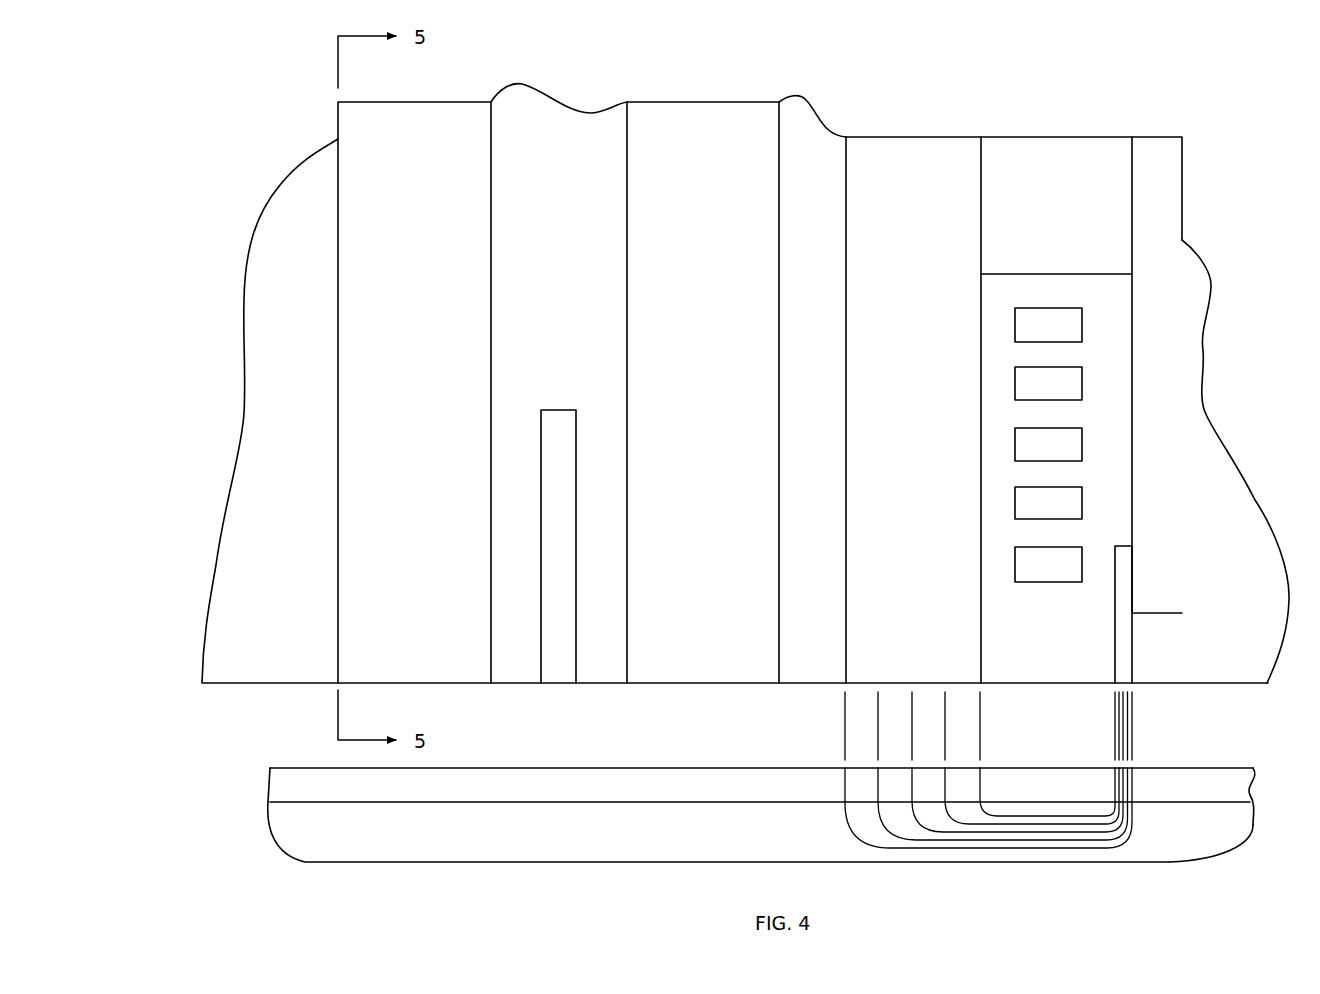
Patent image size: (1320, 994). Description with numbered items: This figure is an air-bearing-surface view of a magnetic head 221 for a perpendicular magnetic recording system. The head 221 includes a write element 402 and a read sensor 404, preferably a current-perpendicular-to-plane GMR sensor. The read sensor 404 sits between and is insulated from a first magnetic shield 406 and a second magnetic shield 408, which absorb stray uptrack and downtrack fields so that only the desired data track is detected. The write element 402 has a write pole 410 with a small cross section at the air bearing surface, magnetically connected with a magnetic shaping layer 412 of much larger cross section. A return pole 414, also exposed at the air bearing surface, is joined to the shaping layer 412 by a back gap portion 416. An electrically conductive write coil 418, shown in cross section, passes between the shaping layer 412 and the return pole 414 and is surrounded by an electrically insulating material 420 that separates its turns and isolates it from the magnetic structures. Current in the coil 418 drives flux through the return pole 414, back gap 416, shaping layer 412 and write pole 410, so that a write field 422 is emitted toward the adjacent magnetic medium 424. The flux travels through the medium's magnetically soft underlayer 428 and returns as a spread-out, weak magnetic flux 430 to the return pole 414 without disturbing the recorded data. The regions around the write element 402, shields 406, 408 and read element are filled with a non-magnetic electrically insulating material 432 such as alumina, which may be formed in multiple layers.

The magnetic head 221 is at (980, 88).
The write element 402 is at (864, 132).
The read sensor 404 is at (558, 667).
The first magnetic shield 406 is at (675, 392).
The second magnetic shield 408 is at (390, 392).
The write pole 410 is at (1125, 653).
The magnetic shaping layer 412 is at (1152, 540).
The return pole 414 is at (873, 362).
The back gap portion 416 is at (1022, 200).
The write coil 418 is at (1050, 323).
The electrically insulating material 420 is at (1008, 642).
The write field 422 is at (1133, 718).
The magnetic medium 424 is at (621, 762).
The magnetically soft underlayer 428 is at (540, 830).
The magnetic flux 430 is at (1127, 837).
The non-magnetic electrically insulating material 432 is at (288, 190).